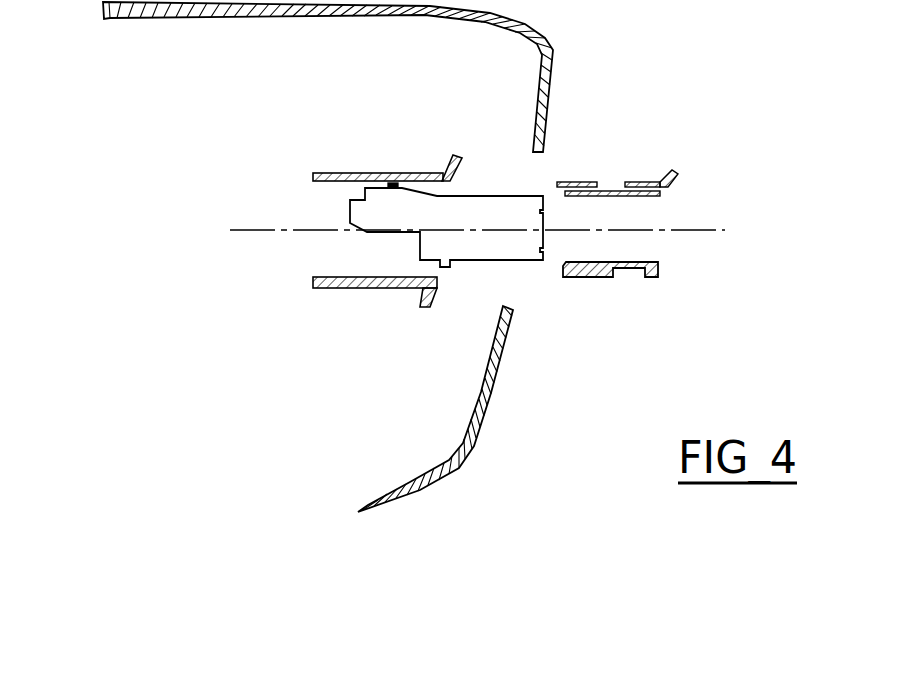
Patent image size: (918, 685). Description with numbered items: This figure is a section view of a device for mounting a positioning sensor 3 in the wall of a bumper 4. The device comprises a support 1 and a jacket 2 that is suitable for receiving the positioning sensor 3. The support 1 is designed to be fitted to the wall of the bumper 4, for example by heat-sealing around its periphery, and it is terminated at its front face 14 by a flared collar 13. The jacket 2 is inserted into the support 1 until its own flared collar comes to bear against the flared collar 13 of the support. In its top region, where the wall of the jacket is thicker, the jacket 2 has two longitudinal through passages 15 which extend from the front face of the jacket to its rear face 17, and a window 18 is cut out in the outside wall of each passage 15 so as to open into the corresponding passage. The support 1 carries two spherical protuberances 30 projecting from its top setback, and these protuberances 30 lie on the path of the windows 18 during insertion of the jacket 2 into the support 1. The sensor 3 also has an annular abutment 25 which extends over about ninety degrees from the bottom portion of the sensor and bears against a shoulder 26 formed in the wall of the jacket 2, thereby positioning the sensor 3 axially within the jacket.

The support 1 is at (335, 173).
The jacket 2 is at (597, 278).
The positioning sensor 3 is at (508, 210).
The bumper 4 is at (548, 82).
The flared collar 13 is at (455, 160).
The front face 14 is at (465, 171).
The longitudinal through passage 15 is at (663, 192).
The rear face 17 is at (562, 268).
The window 18 is at (612, 183).
The annular abutment 25 is at (452, 266).
The shoulder 26 is at (563, 262).
The spherical protuberance 30 is at (390, 182).